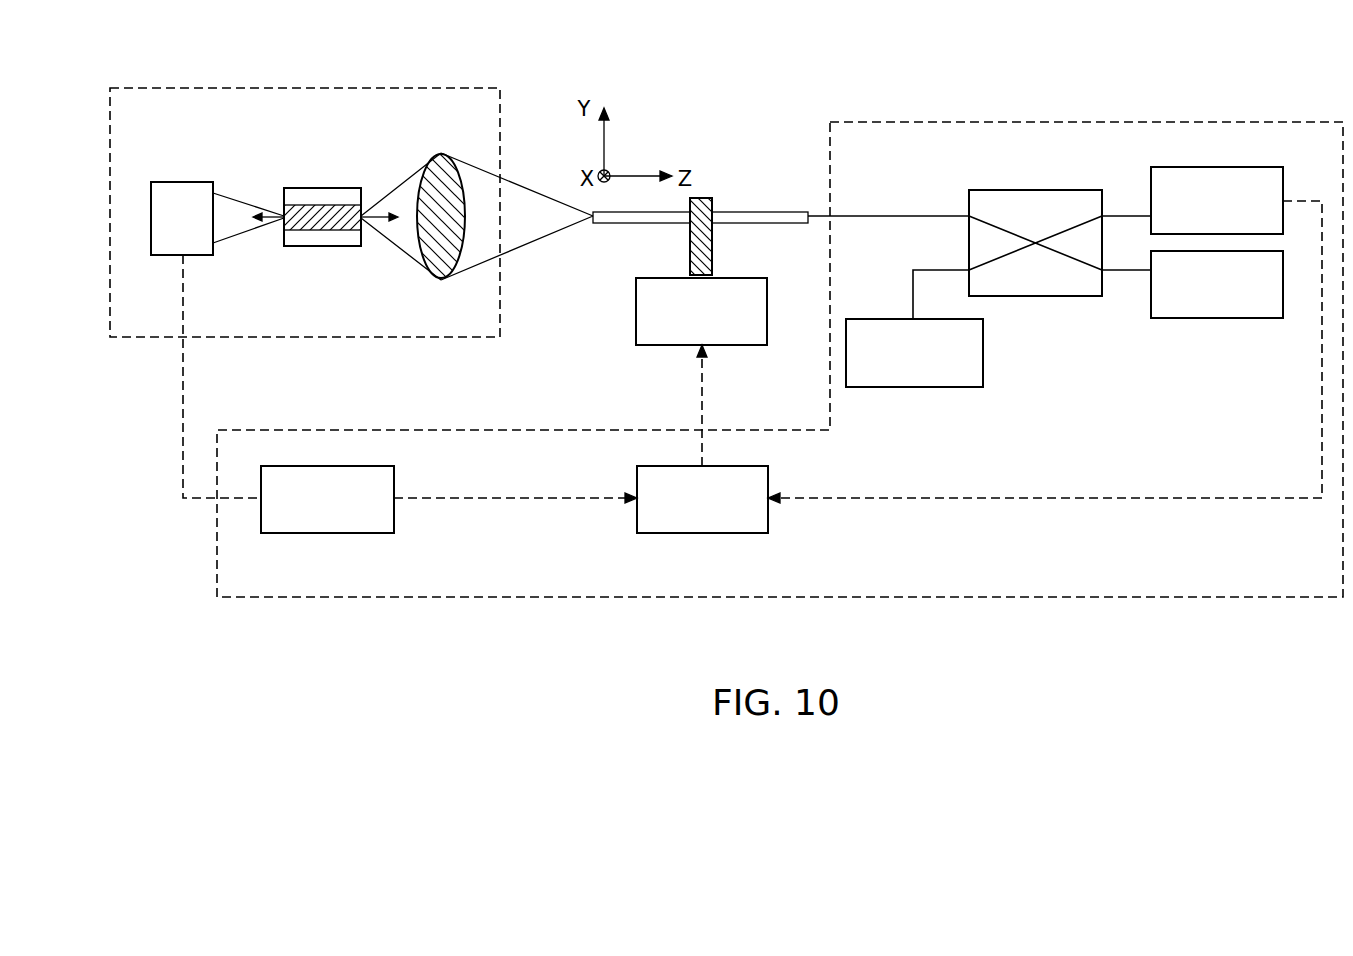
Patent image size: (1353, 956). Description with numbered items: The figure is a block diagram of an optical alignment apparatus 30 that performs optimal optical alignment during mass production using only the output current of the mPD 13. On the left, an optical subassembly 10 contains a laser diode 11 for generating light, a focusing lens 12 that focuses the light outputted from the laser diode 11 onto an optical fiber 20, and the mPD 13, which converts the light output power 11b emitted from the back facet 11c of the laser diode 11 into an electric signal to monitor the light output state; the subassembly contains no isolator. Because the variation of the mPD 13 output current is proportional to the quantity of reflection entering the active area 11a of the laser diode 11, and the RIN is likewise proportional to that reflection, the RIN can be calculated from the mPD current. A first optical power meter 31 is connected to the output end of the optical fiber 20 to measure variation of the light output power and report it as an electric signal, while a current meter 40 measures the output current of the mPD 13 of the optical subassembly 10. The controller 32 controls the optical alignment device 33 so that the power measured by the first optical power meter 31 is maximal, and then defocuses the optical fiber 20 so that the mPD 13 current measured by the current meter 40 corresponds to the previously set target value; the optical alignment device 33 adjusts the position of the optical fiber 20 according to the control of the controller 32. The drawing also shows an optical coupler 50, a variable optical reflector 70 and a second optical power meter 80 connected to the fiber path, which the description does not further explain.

The optical subassembly 10 is at (361, 88).
The laser diode 11 is at (325, 214).
The active area 11a is at (325, 215).
The light output power 11b is at (373, 220).
The back facet 11c is at (270, 222).
The focusing lens 12 is at (440, 155).
The mPD 13 is at (175, 190).
The optical fiber 20 is at (745, 212).
The optical alignment apparatus 30 is at (1103, 122).
The first optical power meter 31 is at (1220, 167).
The controller 32 is at (650, 480).
The optical alignment device 33 is at (636, 316).
The current meter 40 is at (390, 480).
The optical coupler 50 is at (985, 200).
The variable optical reflector 70 is at (1240, 318).
The optical power meter 80 is at (983, 368).